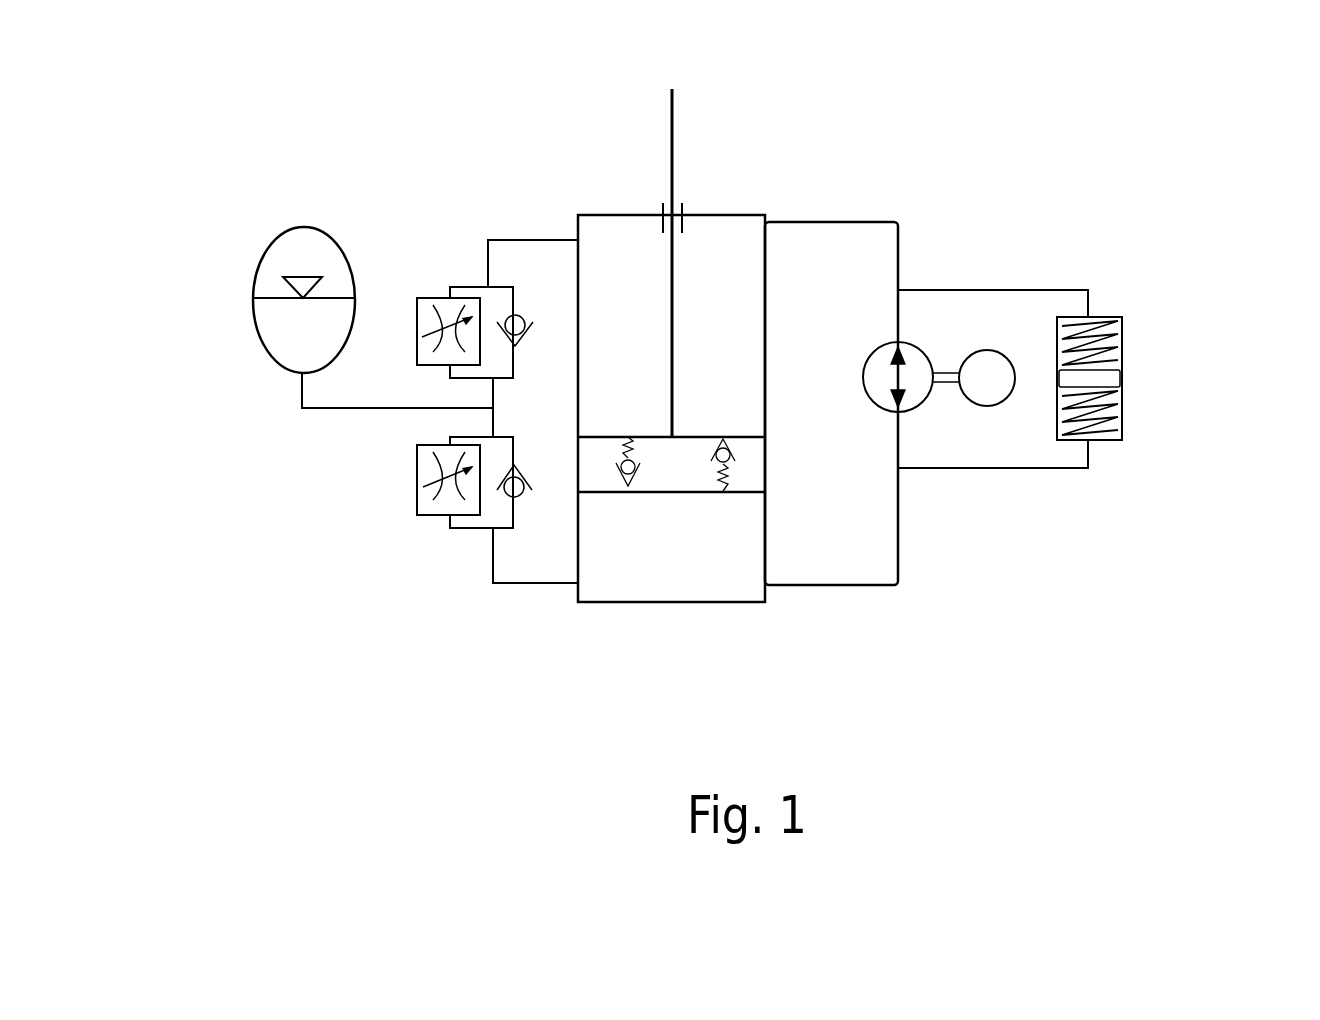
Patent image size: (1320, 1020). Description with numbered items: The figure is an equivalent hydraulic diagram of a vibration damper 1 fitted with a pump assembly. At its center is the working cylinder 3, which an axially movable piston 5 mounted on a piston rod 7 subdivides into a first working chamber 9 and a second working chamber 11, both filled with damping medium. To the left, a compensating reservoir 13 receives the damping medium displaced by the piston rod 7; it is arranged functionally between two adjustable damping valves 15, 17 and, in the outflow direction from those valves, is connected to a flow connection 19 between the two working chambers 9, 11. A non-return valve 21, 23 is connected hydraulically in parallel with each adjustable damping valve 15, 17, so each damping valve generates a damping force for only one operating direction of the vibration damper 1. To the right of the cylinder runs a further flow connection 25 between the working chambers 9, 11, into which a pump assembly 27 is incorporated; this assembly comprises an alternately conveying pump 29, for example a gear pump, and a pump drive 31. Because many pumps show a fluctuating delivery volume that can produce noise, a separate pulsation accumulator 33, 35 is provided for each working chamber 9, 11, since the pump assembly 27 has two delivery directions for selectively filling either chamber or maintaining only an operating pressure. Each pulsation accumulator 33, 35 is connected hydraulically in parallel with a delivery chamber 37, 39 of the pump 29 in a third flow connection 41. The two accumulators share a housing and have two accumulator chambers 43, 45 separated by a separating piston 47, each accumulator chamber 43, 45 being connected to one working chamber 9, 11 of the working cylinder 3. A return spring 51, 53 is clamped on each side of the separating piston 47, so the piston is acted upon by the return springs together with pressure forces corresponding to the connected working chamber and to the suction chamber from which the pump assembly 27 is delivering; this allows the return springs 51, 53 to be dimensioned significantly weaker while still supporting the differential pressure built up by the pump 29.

The vibration damper 1 is at (403, 613).
The working cylinder 3 is at (570, 535).
The piston 5 is at (673, 470).
The piston rod 7 is at (673, 128).
The first working chamber 9 is at (740, 253).
The second working chamber 11 is at (723, 567).
The compensating reservoir 13 is at (253, 375).
The adjustable damping valve 15 is at (430, 290).
The adjustable damping valve 17 is at (412, 500).
The flow connection 19 is at (505, 236).
The non-return valve 21 is at (528, 320).
The non-return valve 23 is at (503, 490).
The further flow connection 25 is at (887, 218).
The pump assembly 27 is at (947, 415).
The pump 29 is at (873, 403).
The pump drive 31 is at (980, 350).
The pulsation accumulator 33 is at (1169, 335).
The pulsation accumulator 35 is at (1166, 458).
The delivery chamber 37 is at (910, 347).
The delivery chamber 39 is at (907, 403).
The third flow connection 41 is at (1023, 288).
The accumulator chamber 43 is at (1170, 384).
The accumulator chamber 45 is at (1134, 478).
The separating piston 47 is at (1112, 378).
The return spring 51 is at (1103, 352).
The return spring 53 is at (1110, 428).